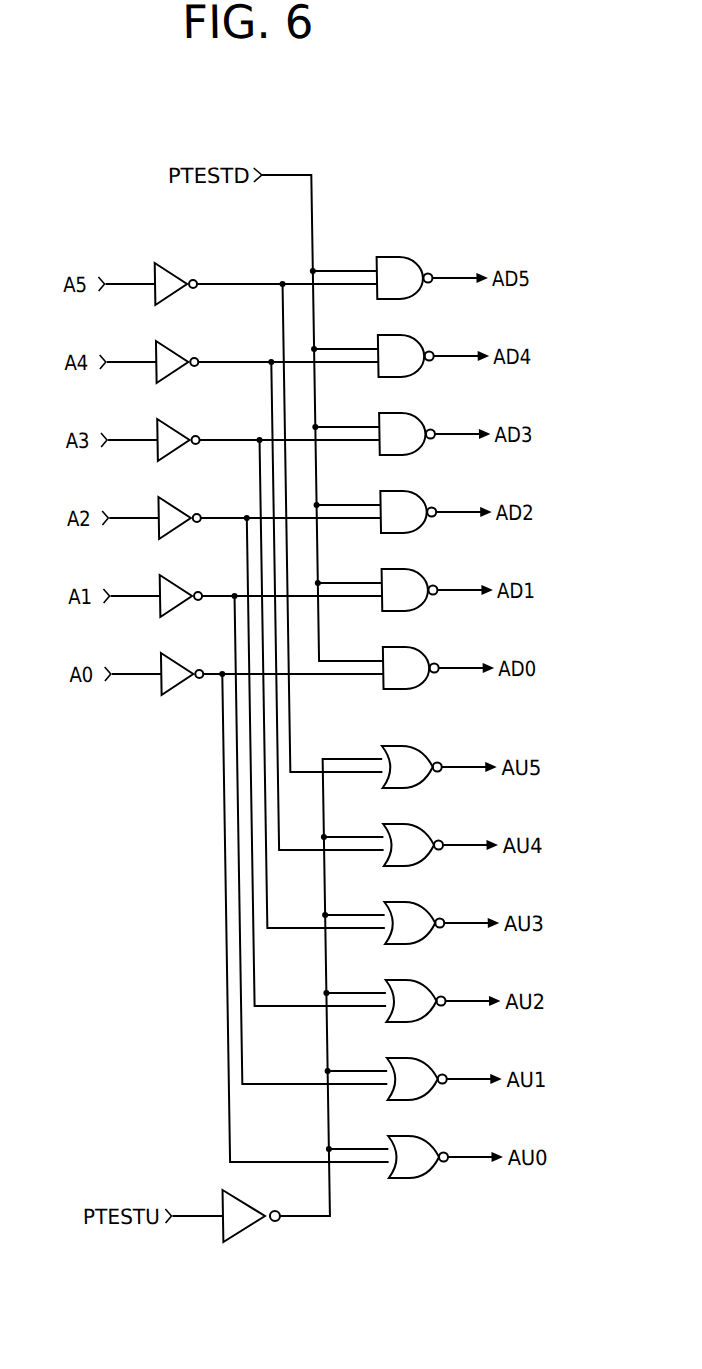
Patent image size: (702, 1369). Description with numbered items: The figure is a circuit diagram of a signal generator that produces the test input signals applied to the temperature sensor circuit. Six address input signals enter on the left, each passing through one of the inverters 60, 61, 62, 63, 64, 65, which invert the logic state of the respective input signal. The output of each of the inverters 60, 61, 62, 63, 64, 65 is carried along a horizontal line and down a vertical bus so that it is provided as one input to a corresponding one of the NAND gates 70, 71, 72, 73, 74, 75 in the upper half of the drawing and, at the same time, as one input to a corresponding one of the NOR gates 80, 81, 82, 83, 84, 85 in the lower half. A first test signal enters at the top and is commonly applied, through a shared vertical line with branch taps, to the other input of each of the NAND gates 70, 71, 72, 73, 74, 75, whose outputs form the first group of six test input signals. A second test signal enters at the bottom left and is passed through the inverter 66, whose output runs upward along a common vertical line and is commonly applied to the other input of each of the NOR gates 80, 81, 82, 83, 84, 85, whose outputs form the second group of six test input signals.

The inverter 60 is at (176, 265).
The inverter 61 is at (176, 343).
The inverter 62 is at (176, 421).
The inverter 63 is at (176, 499).
The inverter 64 is at (176, 577).
The inverter 65 is at (176, 655).
The inverter 66 is at (228, 1230).
The NAND gate 70 is at (396, 258).
The NAND gate 71 is at (407, 337).
The NAND gate 72 is at (407, 415).
The NAND gate 73 is at (407, 493).
The NAND gate 74 is at (407, 571).
The NAND gate 75 is at (407, 649).
The NOR gate 80 is at (403, 745).
The NOR gate 81 is at (403, 823).
The NOR gate 82 is at (403, 901).
The NOR gate 83 is at (403, 979).
The NOR gate 84 is at (403, 1057).
The NOR gate 85 is at (403, 1135).